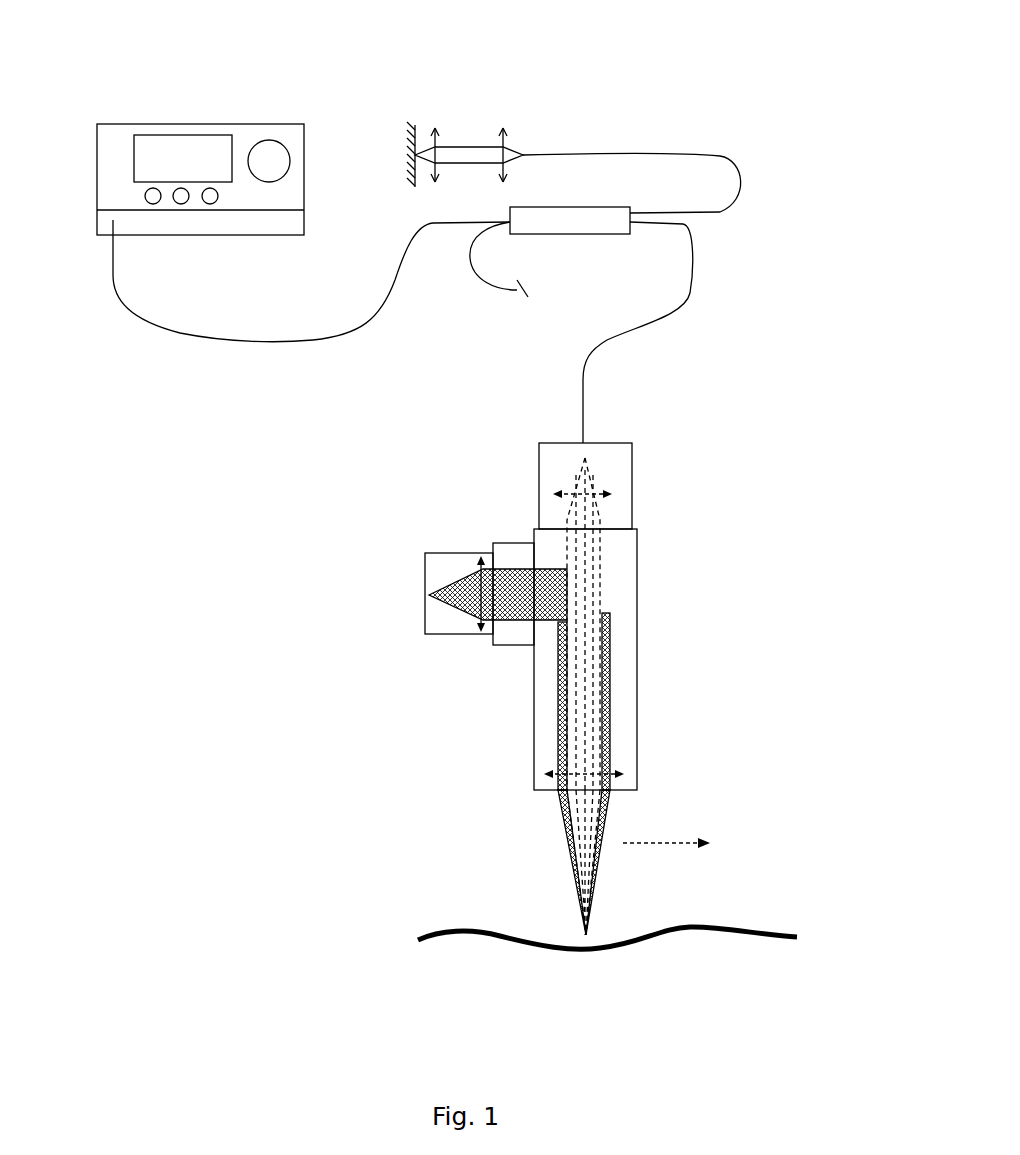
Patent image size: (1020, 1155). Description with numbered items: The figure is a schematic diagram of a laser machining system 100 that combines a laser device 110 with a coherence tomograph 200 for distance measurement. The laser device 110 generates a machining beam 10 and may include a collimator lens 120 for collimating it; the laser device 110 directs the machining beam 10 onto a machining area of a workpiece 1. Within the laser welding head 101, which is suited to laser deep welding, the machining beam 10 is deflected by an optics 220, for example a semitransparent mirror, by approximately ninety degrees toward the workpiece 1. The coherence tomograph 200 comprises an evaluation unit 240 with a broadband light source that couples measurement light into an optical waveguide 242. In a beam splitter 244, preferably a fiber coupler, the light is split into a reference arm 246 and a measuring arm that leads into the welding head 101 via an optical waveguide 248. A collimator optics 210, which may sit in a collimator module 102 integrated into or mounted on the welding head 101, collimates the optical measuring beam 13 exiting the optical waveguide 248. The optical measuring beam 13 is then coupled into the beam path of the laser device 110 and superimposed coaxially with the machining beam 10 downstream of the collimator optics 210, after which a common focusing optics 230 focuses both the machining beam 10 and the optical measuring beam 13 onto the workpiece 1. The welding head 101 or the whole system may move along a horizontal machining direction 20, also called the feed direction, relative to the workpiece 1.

The laser machining system 100 is at (773, 48).
The workpiece 1 is at (733, 927).
The machining beam 10 is at (558, 722).
The optical measuring beam 13 is at (585, 585).
The machining direction 20 is at (665, 847).
The laser welding head 101 is at (637, 658).
The collimator module 102 is at (520, 456).
The laser device 110 is at (398, 620).
The collimator lens 120 is at (473, 562).
The coherence tomograph 200 is at (742, 295).
The collimator optics 210 is at (608, 494).
The optics 220 is at (603, 615).
The focusing optics 230 is at (620, 774).
The evaluation unit 240 is at (197, 124).
The optical waveguide 242 is at (238, 340).
The beam splitter 244 is at (605, 234).
The reference arm 246 is at (616, 153).
The optical waveguide 248 is at (667, 323).